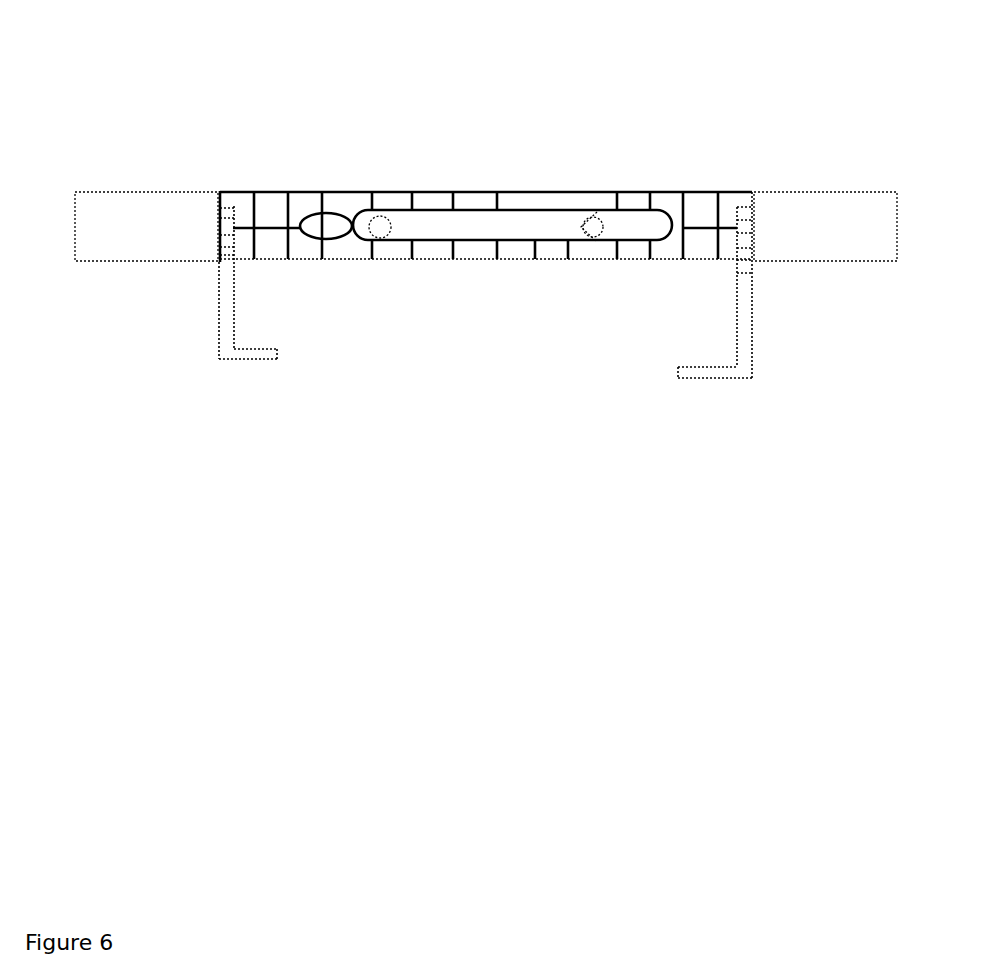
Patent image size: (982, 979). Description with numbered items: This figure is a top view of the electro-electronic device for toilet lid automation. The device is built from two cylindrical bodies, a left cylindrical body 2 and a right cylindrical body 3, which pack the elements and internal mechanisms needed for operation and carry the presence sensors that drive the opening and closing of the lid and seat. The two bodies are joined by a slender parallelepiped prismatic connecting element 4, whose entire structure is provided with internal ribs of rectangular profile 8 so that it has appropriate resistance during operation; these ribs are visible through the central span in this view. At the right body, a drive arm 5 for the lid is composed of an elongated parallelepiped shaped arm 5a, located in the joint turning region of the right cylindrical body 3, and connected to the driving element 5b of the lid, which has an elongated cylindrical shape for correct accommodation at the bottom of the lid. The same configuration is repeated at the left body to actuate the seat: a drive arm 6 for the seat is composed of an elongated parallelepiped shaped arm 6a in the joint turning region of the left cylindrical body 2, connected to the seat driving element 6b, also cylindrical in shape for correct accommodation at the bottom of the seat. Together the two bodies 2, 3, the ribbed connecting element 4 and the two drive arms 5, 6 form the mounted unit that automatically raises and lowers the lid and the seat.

The left cylindrical body 2 is at (152, 190).
The right cylindrical body 3 is at (825, 190).
The slender parallelepiped prismatic connecting element 4 is at (486, 143).
The internal ribs of rectangular profile 8 is at (377, 195).
The lid drive arm 5 is at (729, 340).
The elongated parallelepiped shaped arm 5a is at (749, 310).
The lid driving element 5b is at (678, 370).
The seat drive arm 6 is at (242, 333).
The elongated parallelepiped shaped arm 6a is at (211, 313).
The seat driving element 6b is at (273, 347).